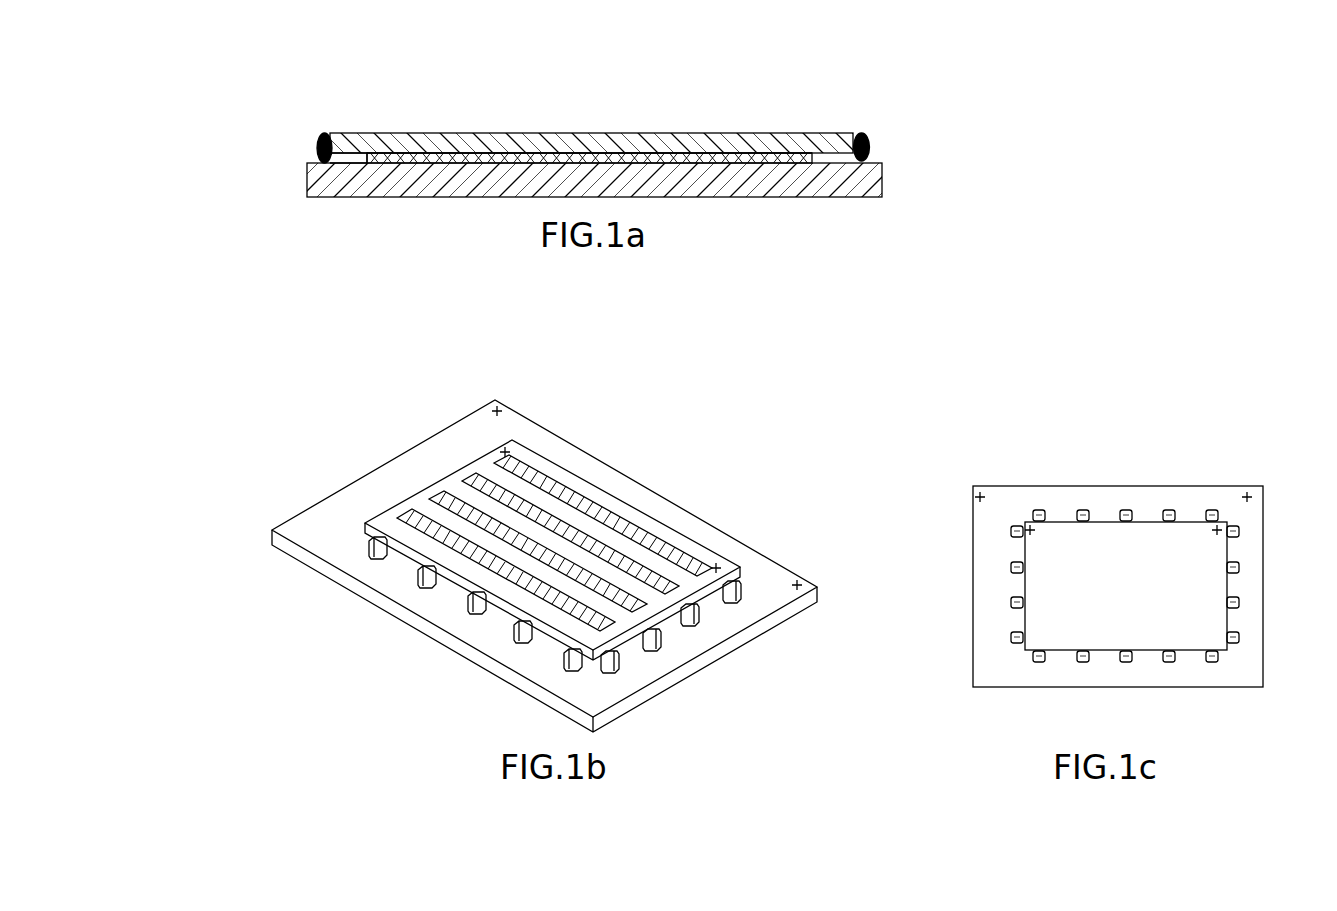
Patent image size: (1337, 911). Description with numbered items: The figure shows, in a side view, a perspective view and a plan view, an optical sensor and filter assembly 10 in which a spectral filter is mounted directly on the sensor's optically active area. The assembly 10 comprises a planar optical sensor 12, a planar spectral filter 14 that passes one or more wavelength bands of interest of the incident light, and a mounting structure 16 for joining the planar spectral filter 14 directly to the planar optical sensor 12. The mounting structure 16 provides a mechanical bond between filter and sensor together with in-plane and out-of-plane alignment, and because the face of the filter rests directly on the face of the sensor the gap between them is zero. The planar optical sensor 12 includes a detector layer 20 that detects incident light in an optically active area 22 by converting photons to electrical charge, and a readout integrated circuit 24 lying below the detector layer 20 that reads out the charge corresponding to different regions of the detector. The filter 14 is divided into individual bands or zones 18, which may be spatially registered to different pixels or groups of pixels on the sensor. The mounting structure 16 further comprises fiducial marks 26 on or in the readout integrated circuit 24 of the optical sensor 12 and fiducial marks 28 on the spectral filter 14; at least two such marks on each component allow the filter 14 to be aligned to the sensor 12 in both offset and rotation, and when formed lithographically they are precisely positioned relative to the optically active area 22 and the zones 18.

In FIG. 1a, the optical sensor and filter assembly 10 is at (312, 86).
In FIG. 1b, the optical sensor and filter assembly 10 is at (331, 412).
In FIG. 1c, the optical sensor and filter assembly 10 is at (1098, 445).
In FIG. 1a, the planar optical sensor 12 is at (277, 152).
In FIG. 1b, the planar optical sensor 12 is at (768, 598).
In FIG. 1c, the planar optical sensor 12 is at (987, 612).
In FIG. 1a, the planar spectral filter 14 is at (815, 133).
In FIG. 1b, the planar spectral filter 14 is at (648, 515).
In FIG. 1c, the planar spectral filter 14 is at (1153, 547).
In FIG. 1a, the mounting structure 16 is at (908, 134).
In FIG. 1b, the mounting structure 16 is at (767, 559).
In FIG. 1c, the mounting structure 16 is at (1012, 498).
In FIG. 1b, the zones 18 is at (575, 490).
In FIG. 1a, the detector layer 20 is at (806, 165).
In FIG. 1a, the optically active area 22 is at (590, 152).
In FIG. 1a, the readout integrated circuit 24 is at (883, 182).
In FIG. 1b, the fiducial marks 26 is at (500, 410).
In FIG. 1c, the fiducial marks 26 is at (975, 491).
In FIG. 1b, the fiducial marks 28 is at (508, 452).
In FIG. 1c, the fiducial marks 28 is at (1225, 526).